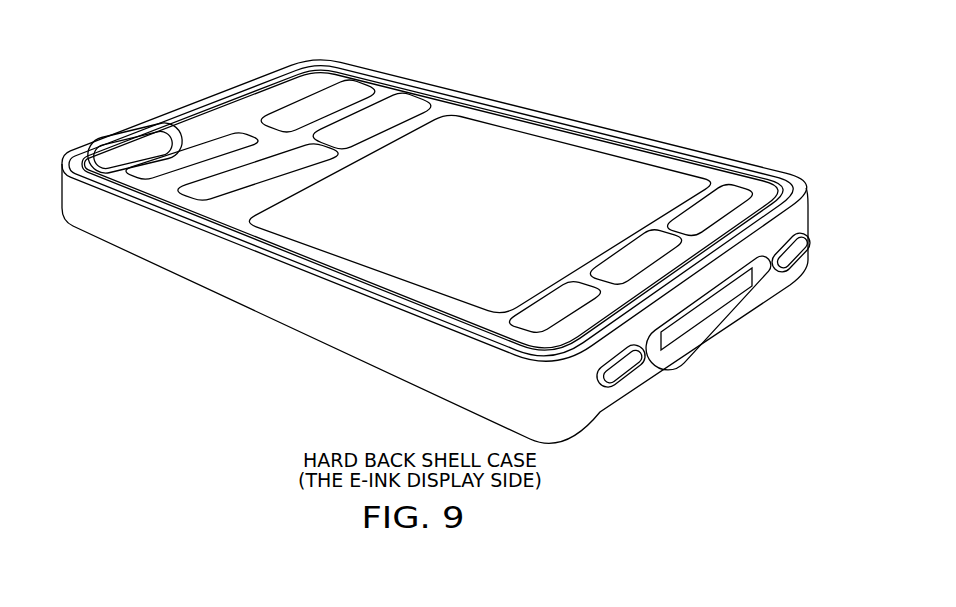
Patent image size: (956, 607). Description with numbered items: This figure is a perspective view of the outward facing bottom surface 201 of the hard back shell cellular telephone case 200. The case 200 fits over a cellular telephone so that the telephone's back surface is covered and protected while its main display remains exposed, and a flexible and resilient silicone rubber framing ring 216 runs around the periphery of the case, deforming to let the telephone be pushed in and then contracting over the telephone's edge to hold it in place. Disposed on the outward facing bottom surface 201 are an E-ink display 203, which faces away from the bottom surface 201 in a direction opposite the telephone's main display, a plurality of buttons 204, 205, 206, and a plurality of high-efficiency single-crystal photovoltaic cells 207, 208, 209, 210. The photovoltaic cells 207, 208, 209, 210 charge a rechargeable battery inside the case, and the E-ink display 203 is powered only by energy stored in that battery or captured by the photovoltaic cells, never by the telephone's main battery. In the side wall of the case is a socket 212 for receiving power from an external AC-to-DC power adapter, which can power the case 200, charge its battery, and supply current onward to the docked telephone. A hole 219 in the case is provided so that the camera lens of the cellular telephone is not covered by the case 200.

The hard back shell cellular telephone case 200 is at (140, 42).
The outward facing bottom surface 201 is at (566, 176).
The E-ink display 203 is at (449, 210).
The button 204 is at (543, 310).
The button 205 is at (625, 262).
The button 206 is at (699, 217).
The high-efficiency single-crystal photovoltaic cell 207 is at (196, 162).
The high-efficiency single-crystal photovoltaic cell 208 is at (314, 110).
The high-efficiency single-crystal photovoltaic cell 209 is at (251, 177).
The high-efficiency single-crystal photovoltaic cell 210 is at (367, 127).
The socket 212 is at (707, 307).
The framing ring 216 is at (86, 153).
The hole 219 is at (141, 150).